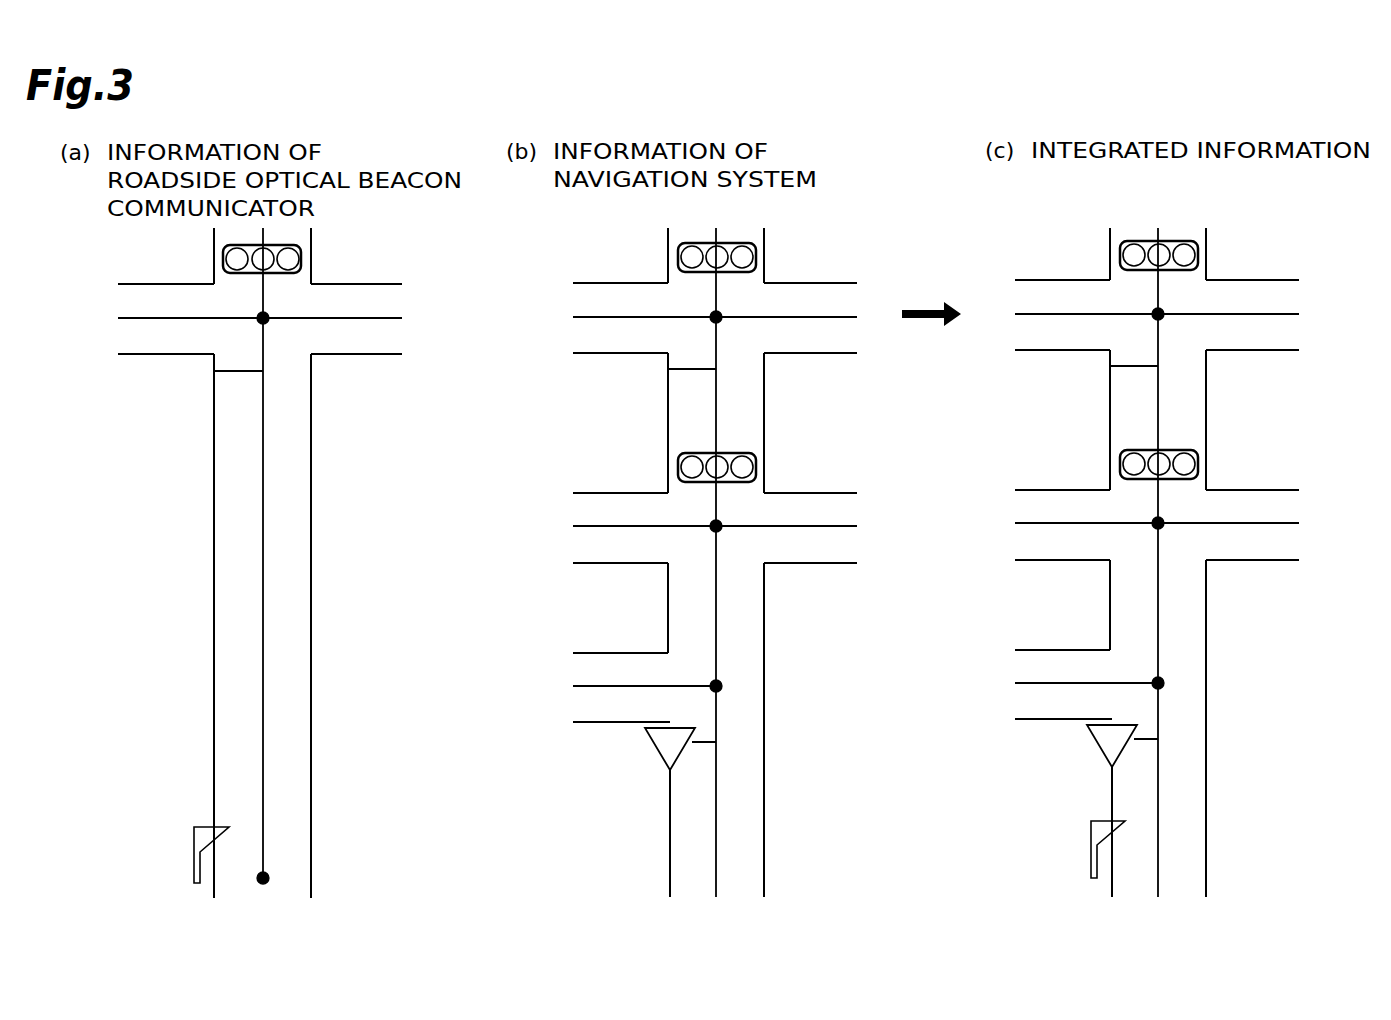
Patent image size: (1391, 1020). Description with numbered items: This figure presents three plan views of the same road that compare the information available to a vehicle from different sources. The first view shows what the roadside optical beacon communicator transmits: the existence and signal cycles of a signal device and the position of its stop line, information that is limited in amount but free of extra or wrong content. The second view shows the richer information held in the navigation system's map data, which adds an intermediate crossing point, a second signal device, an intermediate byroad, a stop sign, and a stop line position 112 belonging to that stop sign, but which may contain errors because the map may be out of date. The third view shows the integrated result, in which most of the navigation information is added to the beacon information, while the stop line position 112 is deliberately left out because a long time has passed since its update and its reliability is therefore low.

The stop line position 112 is at (699, 742).